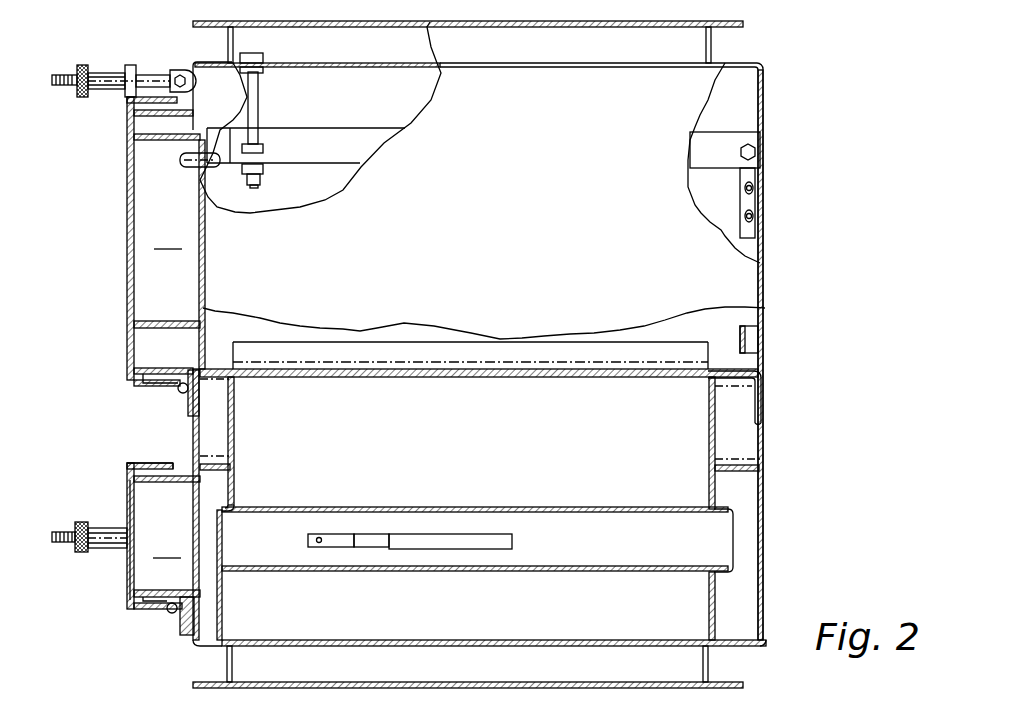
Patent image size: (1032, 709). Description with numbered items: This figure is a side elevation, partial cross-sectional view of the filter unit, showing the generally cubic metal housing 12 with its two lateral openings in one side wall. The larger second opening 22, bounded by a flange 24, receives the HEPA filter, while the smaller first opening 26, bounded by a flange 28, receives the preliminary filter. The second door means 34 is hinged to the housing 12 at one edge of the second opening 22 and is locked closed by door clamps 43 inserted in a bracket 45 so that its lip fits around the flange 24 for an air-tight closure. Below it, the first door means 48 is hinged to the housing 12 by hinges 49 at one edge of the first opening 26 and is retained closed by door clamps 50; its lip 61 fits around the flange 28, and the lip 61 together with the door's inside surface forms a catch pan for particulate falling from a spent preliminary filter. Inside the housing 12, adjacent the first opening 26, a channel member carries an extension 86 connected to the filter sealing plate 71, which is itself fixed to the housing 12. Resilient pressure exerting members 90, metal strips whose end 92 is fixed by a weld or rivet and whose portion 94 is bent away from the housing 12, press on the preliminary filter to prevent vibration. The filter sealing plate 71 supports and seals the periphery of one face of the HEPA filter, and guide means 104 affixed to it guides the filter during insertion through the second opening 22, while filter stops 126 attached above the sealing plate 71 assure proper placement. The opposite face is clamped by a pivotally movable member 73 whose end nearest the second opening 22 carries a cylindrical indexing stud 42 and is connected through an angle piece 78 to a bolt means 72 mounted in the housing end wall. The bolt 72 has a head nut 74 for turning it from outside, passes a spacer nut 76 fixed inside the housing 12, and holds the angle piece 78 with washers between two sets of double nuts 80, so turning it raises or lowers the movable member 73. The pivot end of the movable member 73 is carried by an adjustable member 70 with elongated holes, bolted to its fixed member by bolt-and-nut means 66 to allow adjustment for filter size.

The housing 12 is at (768, 276).
The second opening 22 is at (174, 371).
The flange 24 is at (143, 376).
The first opening 26 is at (163, 536).
The flange 28 is at (180, 466).
The second door means 34 is at (130, 383).
The cylindrical indexing stud 42 is at (182, 167).
The door clamps 43 is at (80, 63).
The bracket 45 is at (128, 64).
The first door means 48 is at (125, 504).
The hinges 49 is at (168, 614).
The door clamps 50 is at (102, 549).
The lip 61 is at (145, 463).
The bolt-and-nut means 66 is at (755, 218).
The adjustable member 70 is at (750, 183).
The filter sealing plate 71 is at (735, 369).
The bolt means 72 is at (258, 118).
The movable member 73 is at (735, 130).
The head nut 74 is at (262, 58).
The spacer nut 76 is at (258, 72).
The angle piece 78 is at (277, 163).
The double nuts 80 is at (263, 156).
The extension 86 is at (708, 444).
The resilient pressure exerting members 90 is at (501, 532).
The end 92 is at (308, 540).
The portion 94 is at (372, 534).
The guide means 104 is at (651, 343).
The filter stops 126 is at (751, 326).